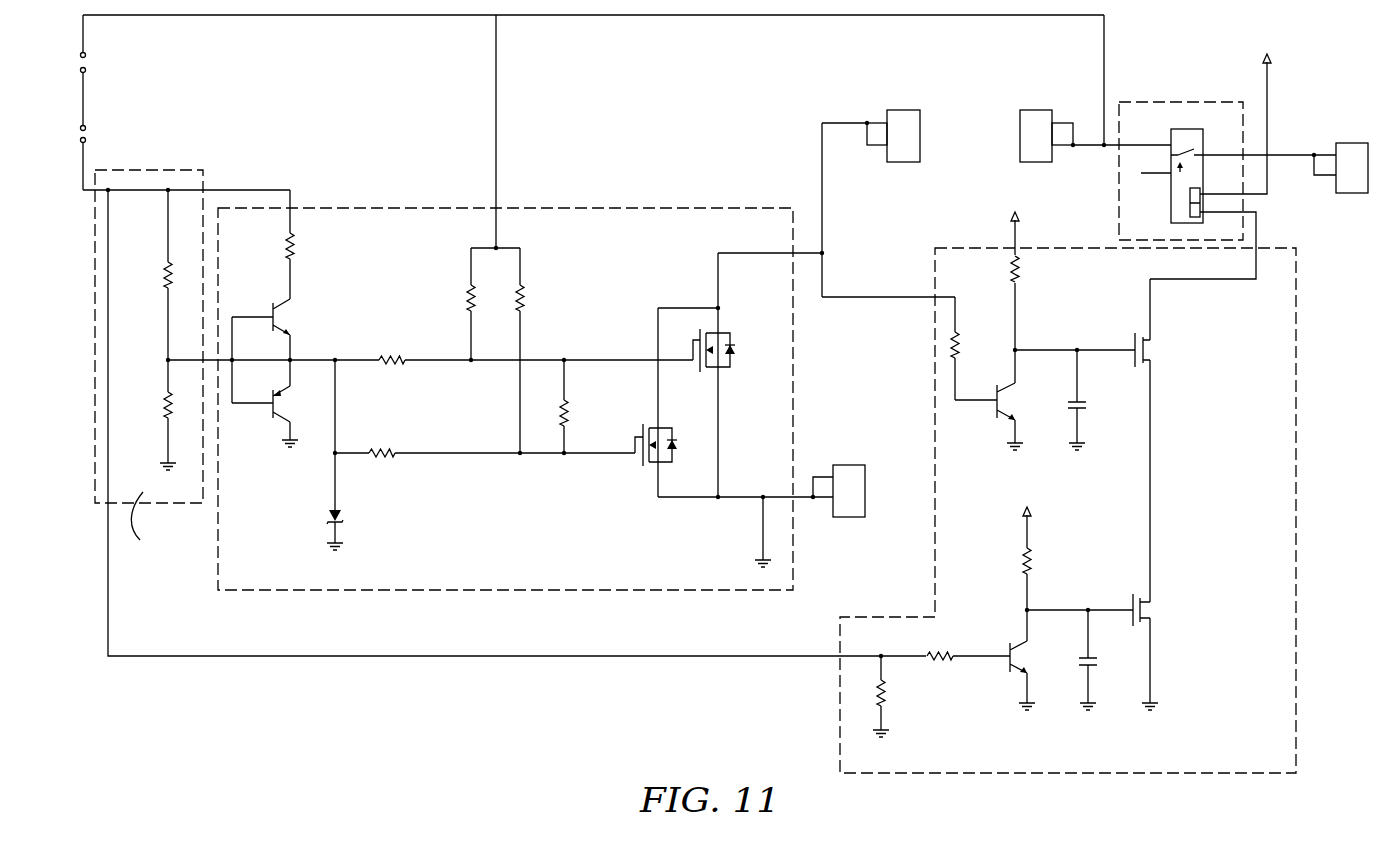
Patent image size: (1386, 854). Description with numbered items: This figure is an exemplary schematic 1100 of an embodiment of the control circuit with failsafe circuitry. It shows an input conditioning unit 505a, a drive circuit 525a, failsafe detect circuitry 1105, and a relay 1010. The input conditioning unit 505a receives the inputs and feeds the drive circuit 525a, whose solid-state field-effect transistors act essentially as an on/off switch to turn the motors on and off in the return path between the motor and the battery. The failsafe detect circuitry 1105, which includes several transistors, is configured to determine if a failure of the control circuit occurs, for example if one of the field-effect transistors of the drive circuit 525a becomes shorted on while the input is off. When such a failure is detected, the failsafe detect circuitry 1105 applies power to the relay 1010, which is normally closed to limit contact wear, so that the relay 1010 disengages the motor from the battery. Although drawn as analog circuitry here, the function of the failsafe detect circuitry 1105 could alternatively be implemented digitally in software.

The schematic 1100 is at (636, 683).
The input conditioning unit 505a is at (181, 170).
The drive circuit 525a is at (600, 209).
The relay 1010 is at (1183, 103).
The failsafe detect circuitry 1105 is at (840, 716).